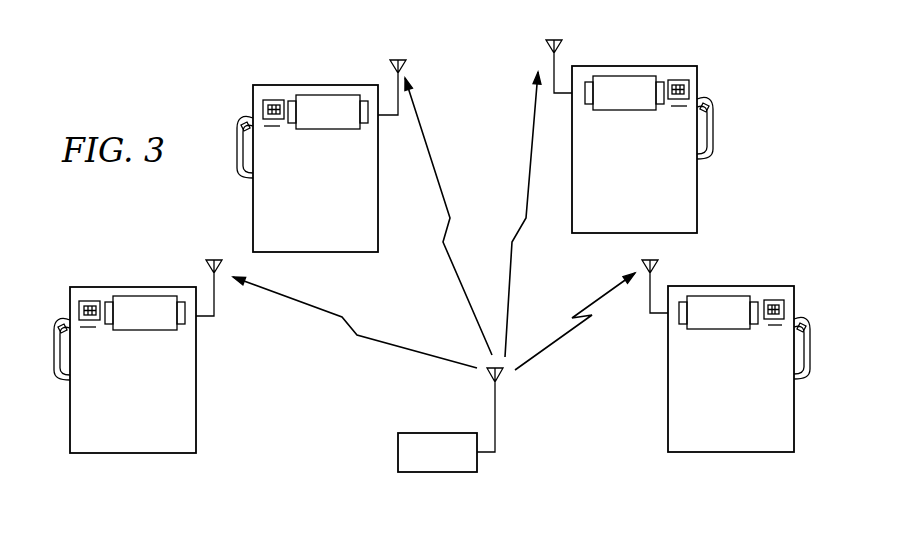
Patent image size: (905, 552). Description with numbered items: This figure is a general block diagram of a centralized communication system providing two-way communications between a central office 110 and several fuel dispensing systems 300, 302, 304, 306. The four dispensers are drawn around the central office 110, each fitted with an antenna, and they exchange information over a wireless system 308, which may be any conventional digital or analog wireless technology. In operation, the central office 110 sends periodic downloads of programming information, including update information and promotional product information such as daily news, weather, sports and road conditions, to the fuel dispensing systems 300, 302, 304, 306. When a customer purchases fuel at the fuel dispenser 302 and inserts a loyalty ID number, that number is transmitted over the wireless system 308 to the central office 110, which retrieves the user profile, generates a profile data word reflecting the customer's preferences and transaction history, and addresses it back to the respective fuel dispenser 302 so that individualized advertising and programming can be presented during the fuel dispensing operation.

The fuel dispensing system 300 is at (133, 287).
The fuel dispensing system 302 is at (315, 85).
The fuel dispensing system 304 is at (638, 66).
The fuel dispensing system 306 is at (722, 286).
The wireless system 308 is at (461, 272).
The central office 110 is at (398, 452).